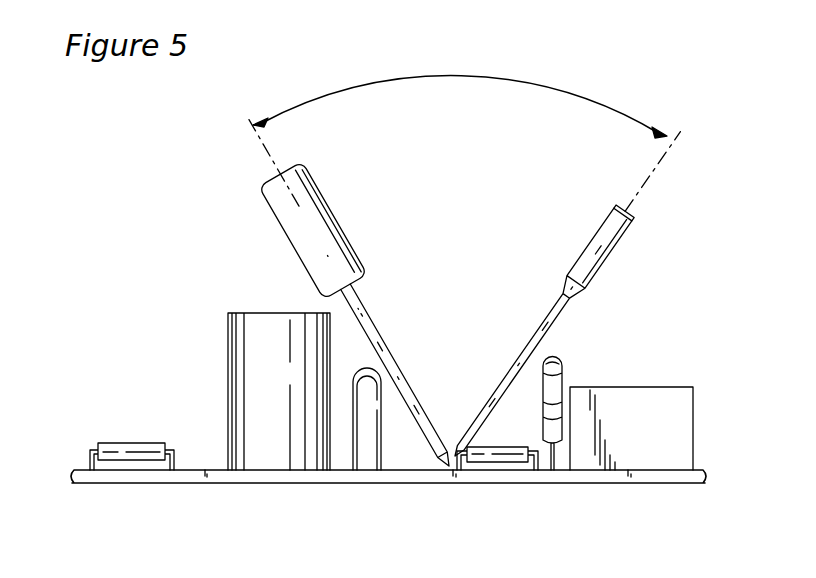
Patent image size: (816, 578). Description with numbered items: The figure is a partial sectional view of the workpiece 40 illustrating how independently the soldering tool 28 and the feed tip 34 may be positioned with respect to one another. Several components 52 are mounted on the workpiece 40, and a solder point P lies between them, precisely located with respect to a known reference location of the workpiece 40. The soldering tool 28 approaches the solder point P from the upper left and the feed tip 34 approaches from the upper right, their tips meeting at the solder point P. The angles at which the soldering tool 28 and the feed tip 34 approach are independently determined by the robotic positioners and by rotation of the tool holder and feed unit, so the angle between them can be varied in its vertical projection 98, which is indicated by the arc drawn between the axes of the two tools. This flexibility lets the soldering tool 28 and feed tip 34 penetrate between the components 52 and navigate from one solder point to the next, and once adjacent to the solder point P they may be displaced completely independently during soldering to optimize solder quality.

The soldering tool 28 is at (302, 251).
The feed tip 34 is at (606, 258).
The workpiece 40 is at (327, 473).
The components 52 is at (372, 463).
The vertical projection 98 is at (458, 73).
The solder point P is at (453, 471).